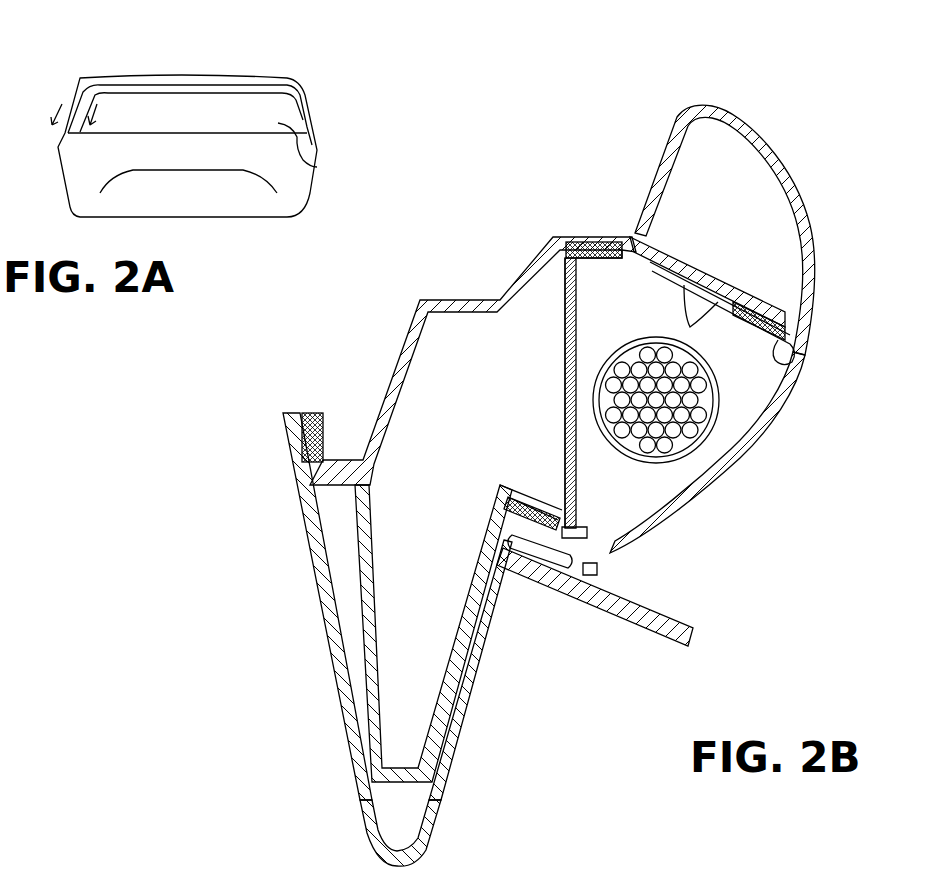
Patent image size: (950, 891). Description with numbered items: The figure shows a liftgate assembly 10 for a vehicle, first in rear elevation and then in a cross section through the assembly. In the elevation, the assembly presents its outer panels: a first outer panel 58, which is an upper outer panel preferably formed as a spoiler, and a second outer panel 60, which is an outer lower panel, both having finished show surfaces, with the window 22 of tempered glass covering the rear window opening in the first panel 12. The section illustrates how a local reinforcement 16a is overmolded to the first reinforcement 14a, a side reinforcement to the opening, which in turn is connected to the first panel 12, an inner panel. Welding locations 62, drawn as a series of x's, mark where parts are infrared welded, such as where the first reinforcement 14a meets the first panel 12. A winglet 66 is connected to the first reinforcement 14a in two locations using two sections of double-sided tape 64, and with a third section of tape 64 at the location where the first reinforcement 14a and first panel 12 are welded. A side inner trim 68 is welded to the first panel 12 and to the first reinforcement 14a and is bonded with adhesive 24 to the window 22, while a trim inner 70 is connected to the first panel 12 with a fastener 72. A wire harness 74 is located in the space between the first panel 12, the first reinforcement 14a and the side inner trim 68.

In FIG. 2A, the liftgate assembly 10 is at (346, 118).
In FIG. 2A, the first panel 12 is at (220, 88).
In FIG. 2B, the first panel 12 is at (404, 340).
In FIG. 2B, the first reinforcement 14a is at (577, 316).
In FIG. 2B, the local reinforcement 16a is at (562, 386).
In FIG. 2A, the window 22 is at (317, 167).
In FIG. 2B, the window 22 is at (648, 622).
In FIG. 2B, the adhesive 24 is at (544, 565).
In FIG. 2A, the first outer panel 58 is at (118, 76).
In FIG. 2A, the second outer panel 60 is at (251, 214).
In FIG. 2B, the welding location 62 is at (597, 242).
In FIG. 2B, the tape 64 is at (296, 428).
In FIG. 2B, the winglet 66 is at (438, 803).
In FIG. 2B, the side inner trim 68 is at (697, 500).
In FIG. 2B, the trim inner 70 is at (813, 238).
In FIG. 2B, the fastener 72 is at (728, 262).
In FIG. 2B, the wire harness 74 is at (717, 423).